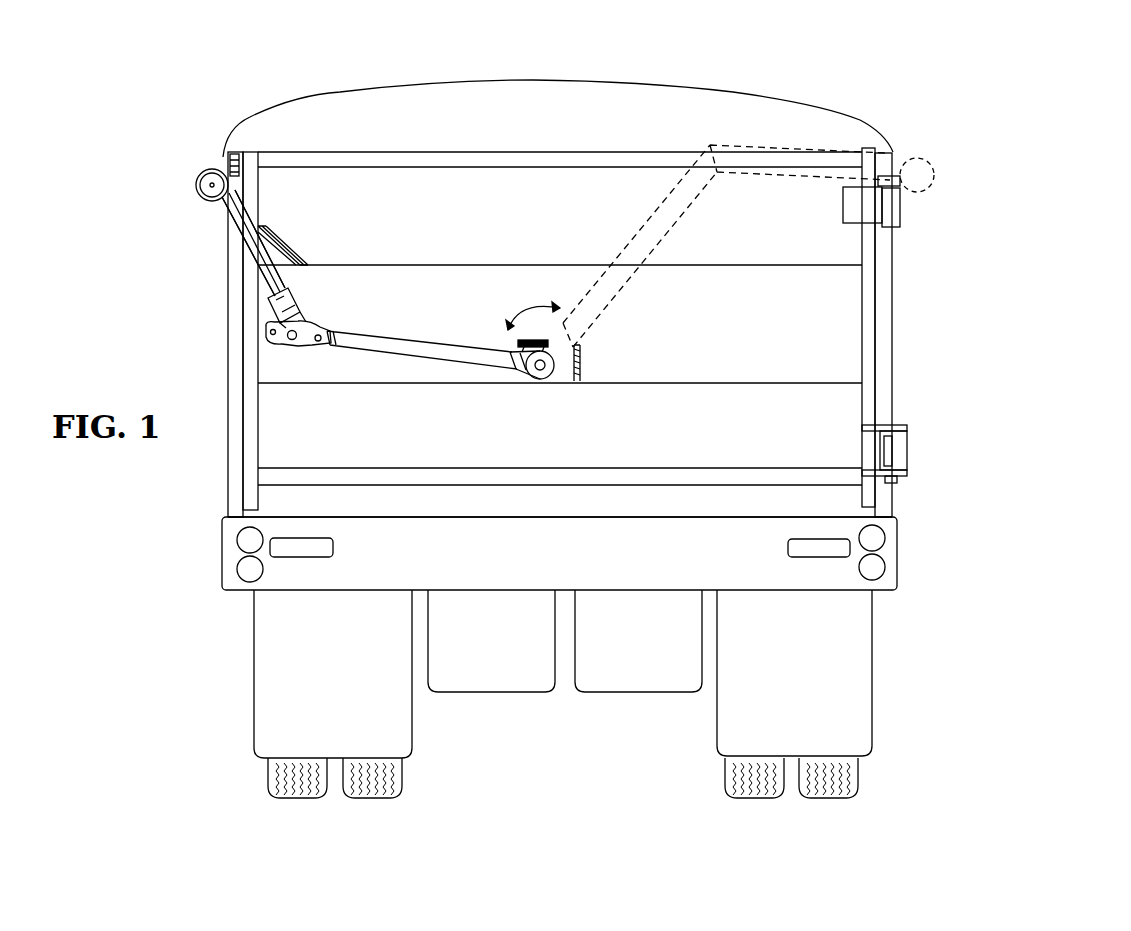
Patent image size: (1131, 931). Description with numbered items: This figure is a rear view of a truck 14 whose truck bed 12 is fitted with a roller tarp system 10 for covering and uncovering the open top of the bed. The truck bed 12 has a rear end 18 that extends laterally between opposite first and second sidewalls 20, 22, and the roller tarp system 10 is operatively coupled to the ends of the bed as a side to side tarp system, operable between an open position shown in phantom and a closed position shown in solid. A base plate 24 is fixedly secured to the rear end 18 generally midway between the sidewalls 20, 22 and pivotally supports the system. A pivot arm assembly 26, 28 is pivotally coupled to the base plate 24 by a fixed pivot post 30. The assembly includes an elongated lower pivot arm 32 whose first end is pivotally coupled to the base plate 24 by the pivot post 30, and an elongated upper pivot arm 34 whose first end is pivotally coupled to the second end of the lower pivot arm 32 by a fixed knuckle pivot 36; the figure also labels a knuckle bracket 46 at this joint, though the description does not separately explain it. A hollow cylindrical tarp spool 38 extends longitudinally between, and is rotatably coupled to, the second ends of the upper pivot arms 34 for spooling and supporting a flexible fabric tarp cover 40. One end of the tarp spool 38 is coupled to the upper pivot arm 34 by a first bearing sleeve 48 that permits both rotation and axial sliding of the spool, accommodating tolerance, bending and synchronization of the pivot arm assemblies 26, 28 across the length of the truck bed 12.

The roller tarp system 10 is at (1080, 110).
The truck bed 12 is at (428, 152).
The truck 14 is at (900, 580).
The rear end 18 is at (860, 295).
The first sidewall 20 is at (893, 360).
The second sidewall 22 is at (228, 378).
The base plate 24 is at (580, 372).
The pivot arm assembly 26 is at (372, 331).
The pivot arm assembly 28 is at (433, 375).
The fixed pivot post 30 is at (540, 380).
The lower pivot arm 32 is at (420, 352).
The upper pivot arm 34 is at (240, 248).
The fixed knuckle pivot 36 is at (294, 344).
The tarp spool 38 is at (206, 184).
The tarp cover 40 is at (730, 90).
The bracket plate 46 is at (265, 330).
The first bearing sleeve 48 is at (200, 200).